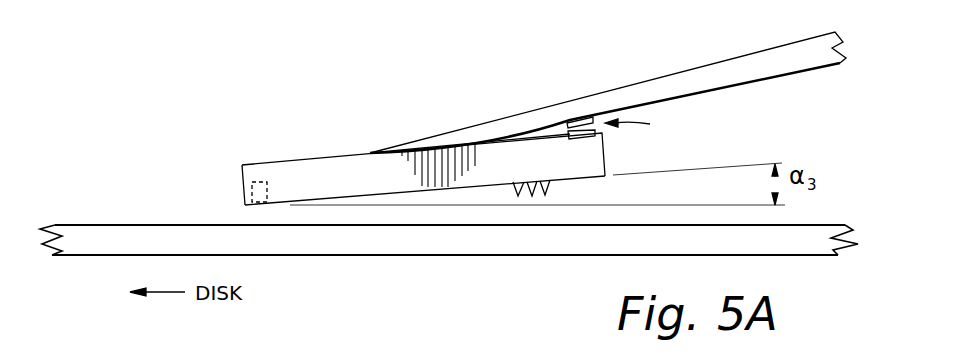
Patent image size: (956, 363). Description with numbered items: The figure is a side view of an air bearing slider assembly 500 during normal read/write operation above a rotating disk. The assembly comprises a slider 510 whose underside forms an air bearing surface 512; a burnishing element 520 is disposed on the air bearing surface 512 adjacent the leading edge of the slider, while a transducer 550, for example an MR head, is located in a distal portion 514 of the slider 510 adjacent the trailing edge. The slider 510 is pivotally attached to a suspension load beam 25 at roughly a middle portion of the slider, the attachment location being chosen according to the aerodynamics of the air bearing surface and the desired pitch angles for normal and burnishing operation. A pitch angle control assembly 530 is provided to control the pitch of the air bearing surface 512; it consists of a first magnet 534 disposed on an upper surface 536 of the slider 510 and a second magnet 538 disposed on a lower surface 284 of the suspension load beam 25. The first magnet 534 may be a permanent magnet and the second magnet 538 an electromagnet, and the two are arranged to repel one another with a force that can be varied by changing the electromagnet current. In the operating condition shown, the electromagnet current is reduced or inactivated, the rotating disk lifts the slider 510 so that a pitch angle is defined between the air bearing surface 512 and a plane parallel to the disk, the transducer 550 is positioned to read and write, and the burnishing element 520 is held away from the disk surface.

The air bearing slider assembly 500 is at (192, 111).
The slider 510 is at (352, 149).
The air bearing surface 512 is at (383, 197).
The distal portion 514 is at (243, 172).
The burnishing element 520 is at (536, 205).
The transducer 550 is at (258, 182).
The suspension load beam 25 is at (726, 60).
The lower surface 284 is at (763, 80).
The upper surface 536 is at (502, 143).
The second magnet 538 is at (580, 120).
The first magnet 534 is at (575, 139).
The pitch angle control assembly 530 is at (652, 125).